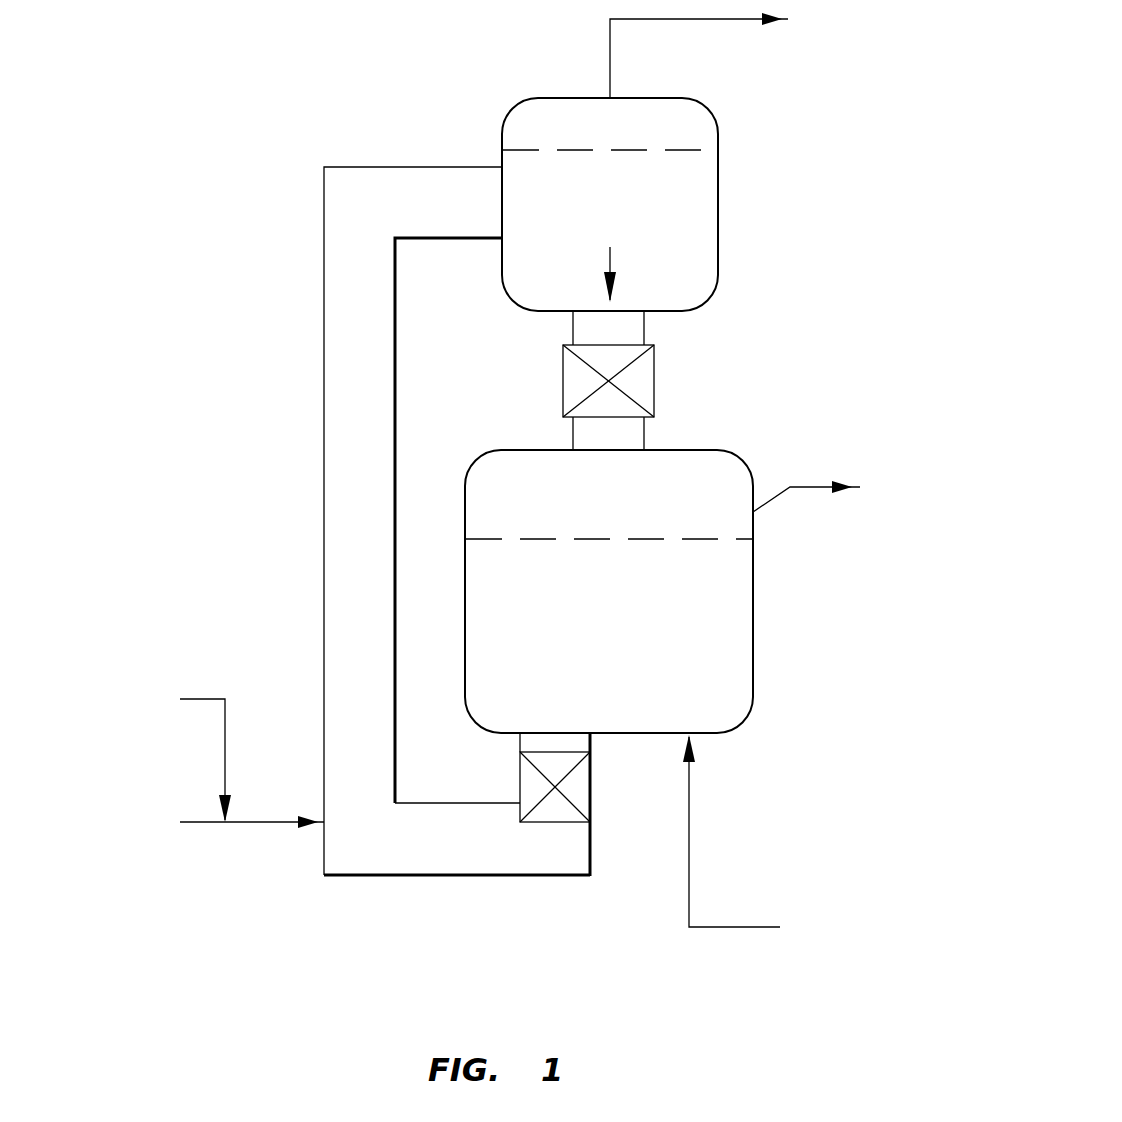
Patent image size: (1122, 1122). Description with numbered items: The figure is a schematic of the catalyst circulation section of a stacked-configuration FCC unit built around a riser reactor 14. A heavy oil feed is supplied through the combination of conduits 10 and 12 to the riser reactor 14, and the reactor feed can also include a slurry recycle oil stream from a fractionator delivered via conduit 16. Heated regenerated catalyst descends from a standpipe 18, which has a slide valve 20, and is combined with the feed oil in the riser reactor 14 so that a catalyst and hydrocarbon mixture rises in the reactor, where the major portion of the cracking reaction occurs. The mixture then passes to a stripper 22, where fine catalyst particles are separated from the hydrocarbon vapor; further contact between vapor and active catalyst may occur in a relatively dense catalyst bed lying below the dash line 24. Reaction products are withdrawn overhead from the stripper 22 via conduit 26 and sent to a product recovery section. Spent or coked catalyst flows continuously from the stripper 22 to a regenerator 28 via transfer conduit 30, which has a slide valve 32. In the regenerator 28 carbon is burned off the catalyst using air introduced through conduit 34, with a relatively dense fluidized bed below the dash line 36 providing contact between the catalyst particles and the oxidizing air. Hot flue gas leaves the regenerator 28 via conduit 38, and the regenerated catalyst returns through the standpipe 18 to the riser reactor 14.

The conduit 10 is at (203, 825).
The conduit 12 is at (270, 825).
The riser reactor 14 is at (324, 397).
The conduit 16 is at (226, 725).
The standpipe 18 is at (591, 740).
The slide valve 20 is at (591, 798).
The stripper 22 is at (718, 200).
The dash line 24 is at (612, 150).
The conduit 26 is at (610, 38).
The regenerator 28 is at (753, 603).
The transfer conduit 30 is at (645, 323).
The slide valve 32 is at (655, 384).
The conduit 34 is at (713, 928).
The dash line 36 is at (622, 539).
The conduit 38 is at (795, 487).